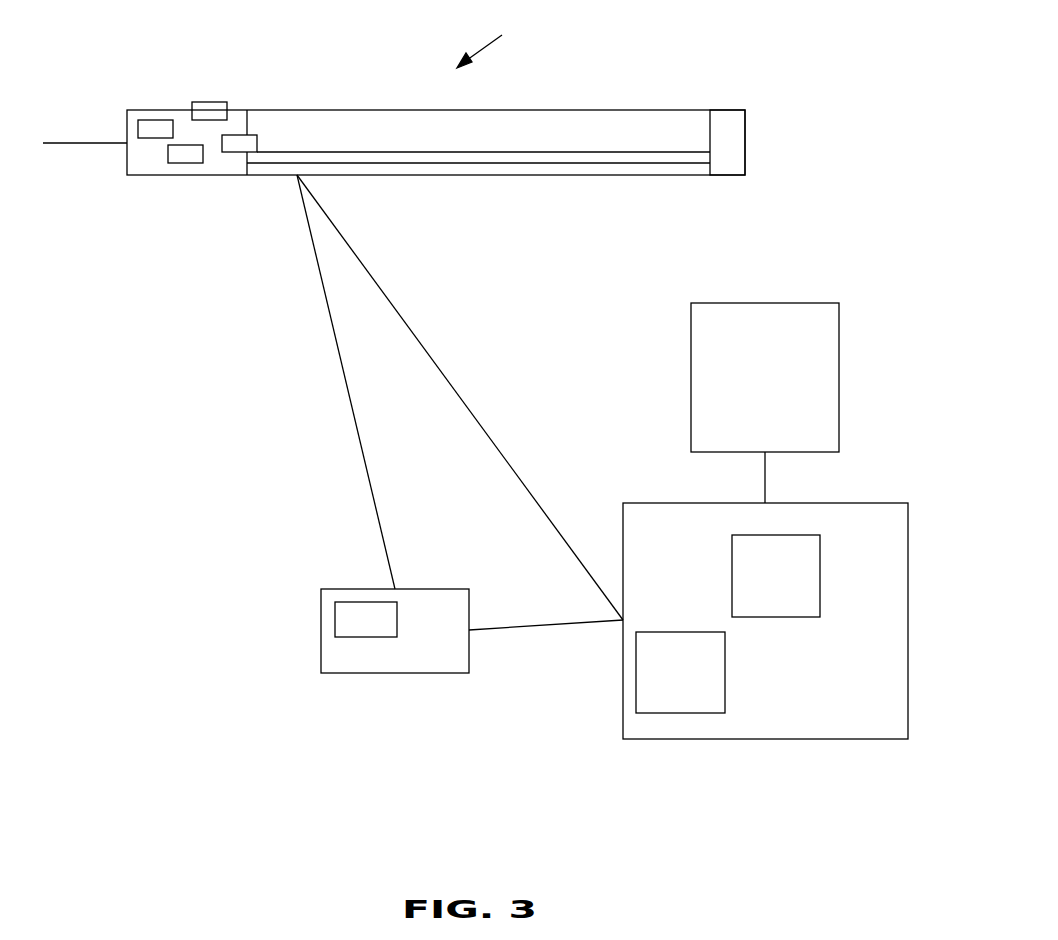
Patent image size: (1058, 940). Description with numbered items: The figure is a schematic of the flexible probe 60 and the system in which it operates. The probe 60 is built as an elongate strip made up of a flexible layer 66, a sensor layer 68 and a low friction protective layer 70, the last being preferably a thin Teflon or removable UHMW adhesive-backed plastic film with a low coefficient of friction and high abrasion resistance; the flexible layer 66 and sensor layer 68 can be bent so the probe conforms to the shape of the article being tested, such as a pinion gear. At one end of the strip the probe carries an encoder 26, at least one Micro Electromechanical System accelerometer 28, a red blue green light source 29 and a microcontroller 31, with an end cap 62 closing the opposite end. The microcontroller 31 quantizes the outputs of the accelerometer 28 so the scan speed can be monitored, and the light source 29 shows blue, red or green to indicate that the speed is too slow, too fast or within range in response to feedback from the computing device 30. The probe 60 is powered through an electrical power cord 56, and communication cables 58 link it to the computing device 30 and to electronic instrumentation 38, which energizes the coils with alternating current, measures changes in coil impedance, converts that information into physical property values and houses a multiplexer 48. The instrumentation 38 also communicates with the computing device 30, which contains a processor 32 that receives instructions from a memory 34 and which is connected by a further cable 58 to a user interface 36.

The encoder 26 is at (158, 130).
The Micro Electromechanical System accelerometer 28 is at (187, 157).
The red blue green light source 29 is at (212, 110).
The computing device 30 is at (887, 638).
The microcontroller 31 is at (240, 147).
The processor 32 is at (680, 695).
The memory 34 is at (807, 568).
The user interface 36 is at (825, 358).
The electronic instrumentation 38 is at (441, 657).
The multiplexer 48 is at (343, 617).
The electrical power cord 56 is at (80, 143).
The communication cables 58 is at (439, 370).
The flexible probe 60 is at (495, 43).
The end cap 62 is at (733, 145).
The flexible layer 66 is at (656, 125).
The sensor layer 68 is at (696, 157).
The low friction protective layer 70 is at (660, 168).